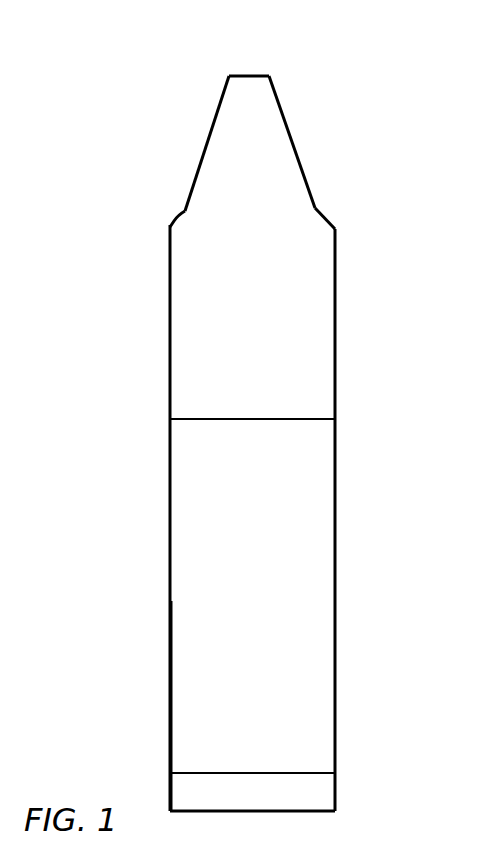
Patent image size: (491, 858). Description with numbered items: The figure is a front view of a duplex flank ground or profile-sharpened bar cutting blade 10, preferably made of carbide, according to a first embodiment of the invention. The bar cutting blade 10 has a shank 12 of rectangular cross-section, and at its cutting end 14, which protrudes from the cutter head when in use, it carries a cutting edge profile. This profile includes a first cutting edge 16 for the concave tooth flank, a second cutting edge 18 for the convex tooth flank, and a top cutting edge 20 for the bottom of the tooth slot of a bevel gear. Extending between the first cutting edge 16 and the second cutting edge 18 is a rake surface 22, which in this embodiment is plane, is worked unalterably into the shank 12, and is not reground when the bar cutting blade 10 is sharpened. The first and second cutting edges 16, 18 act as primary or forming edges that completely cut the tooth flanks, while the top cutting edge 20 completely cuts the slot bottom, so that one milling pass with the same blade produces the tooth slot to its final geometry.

The bar cutting blade 10 is at (343, 320).
The shank 12 is at (307, 572).
The cutting end 14 is at (313, 172).
The first cutting edge 16 is at (213, 125).
The second cutting edge 18 is at (283, 125).
The top cutting edge 20 is at (244, 75).
The rake surface 22 is at (205, 197).